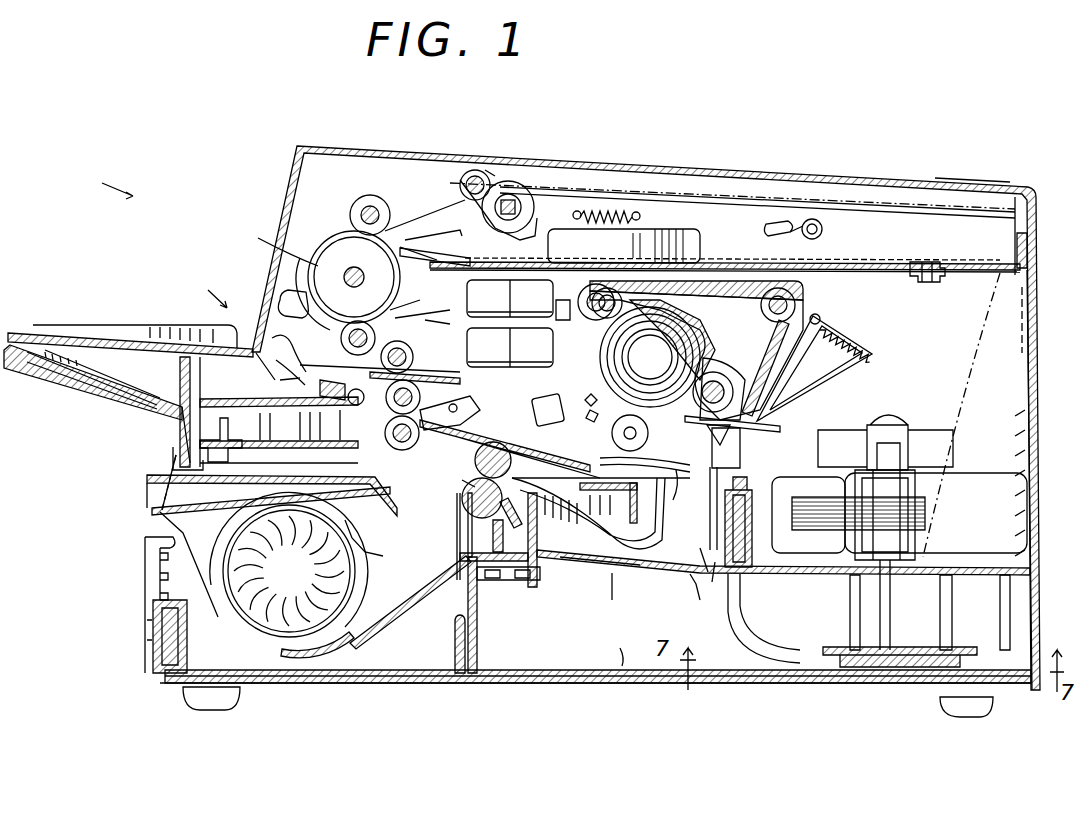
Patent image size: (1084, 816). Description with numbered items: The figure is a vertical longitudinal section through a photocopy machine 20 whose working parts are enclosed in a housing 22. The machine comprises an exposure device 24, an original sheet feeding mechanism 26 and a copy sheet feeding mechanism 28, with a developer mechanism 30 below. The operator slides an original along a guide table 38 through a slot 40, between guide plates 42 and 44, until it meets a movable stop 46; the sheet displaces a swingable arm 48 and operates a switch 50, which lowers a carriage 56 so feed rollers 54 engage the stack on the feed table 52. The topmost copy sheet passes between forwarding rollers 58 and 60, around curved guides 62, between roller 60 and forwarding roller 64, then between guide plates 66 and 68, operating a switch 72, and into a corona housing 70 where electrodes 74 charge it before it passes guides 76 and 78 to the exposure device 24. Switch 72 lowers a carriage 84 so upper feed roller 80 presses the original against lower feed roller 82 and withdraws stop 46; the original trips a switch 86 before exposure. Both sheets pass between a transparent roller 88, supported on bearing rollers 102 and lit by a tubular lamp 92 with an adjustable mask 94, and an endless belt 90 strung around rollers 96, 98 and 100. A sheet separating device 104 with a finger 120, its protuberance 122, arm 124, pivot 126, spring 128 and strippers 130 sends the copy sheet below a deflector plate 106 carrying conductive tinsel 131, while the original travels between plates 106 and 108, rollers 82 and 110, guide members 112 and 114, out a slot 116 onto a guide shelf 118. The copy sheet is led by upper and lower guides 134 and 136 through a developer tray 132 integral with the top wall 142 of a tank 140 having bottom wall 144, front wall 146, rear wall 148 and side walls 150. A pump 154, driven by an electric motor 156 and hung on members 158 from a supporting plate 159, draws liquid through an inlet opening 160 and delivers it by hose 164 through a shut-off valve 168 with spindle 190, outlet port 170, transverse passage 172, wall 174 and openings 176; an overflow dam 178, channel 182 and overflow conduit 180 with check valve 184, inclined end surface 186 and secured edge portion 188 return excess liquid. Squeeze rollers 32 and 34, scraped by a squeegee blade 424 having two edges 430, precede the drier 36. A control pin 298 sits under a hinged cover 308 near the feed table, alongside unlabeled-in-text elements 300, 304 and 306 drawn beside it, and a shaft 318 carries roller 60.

The photocopy machine 20 is at (103, 187).
The housing 22 is at (283, 172).
The exposure device 24 is at (713, 266).
The original sheet feeding mechanism 26 is at (204, 290).
The copy sheet feeding mechanism 28 is at (533, 176).
The developer mechanism 30 is at (1005, 453).
The upper squeeze roller 32 is at (512, 457).
The lower squeeze roller 34 is at (462, 494).
The drier 36 is at (400, 605).
The guide table 38 is at (146, 328).
The slot 40 is at (246, 340).
The guide plate 42 is at (294, 350).
The guide plate 44 is at (267, 369).
The movable stop 46 is at (448, 372).
The swingable arm 48 is at (288, 380).
The switch 50 is at (300, 296).
The feed table 52 is at (688, 258).
The feed rollers 54 is at (732, 174).
The movable carriage 56 is at (472, 170).
The forwarding roller 58 is at (362, 196).
The forwarding roller 60 is at (343, 236).
The curved guides 62 is at (316, 236).
The forwarding roller 64 is at (352, 322).
The guide plate 66 is at (420, 307).
The guide plate 68 is at (425, 362).
The corona housing 70 is at (435, 256).
The switch 72 is at (354, 277).
The electrodes 74 is at (510, 323).
The block 76 is at (563, 300).
The guide 78 is at (594, 293).
The upper feed roller 80 is at (338, 373).
The lower feed roller 82 is at (440, 400).
The movable carriage 84 is at (478, 412).
The switch 86 is at (547, 409).
The transparent roller 88 is at (672, 337).
The endless belt 90 is at (722, 280).
The tubular lamp 92 is at (650, 357).
The adjustable mask 94 is at (693, 305).
The roller 96 is at (652, 240).
The roller 98 is at (735, 356).
The roller 100 is at (696, 355).
The bearing rollers 102 is at (654, 439).
The sheet separating device 104 is at (769, 437).
The deflector plate 106 is at (645, 459).
The guide plate 108 is at (580, 400).
The roller 110 is at (420, 438).
The guide member 112 is at (252, 428).
The guide member 114 is at (252, 428).
The slot 116 is at (180, 404).
The guide shelf 118 is at (112, 340).
The finger 120 is at (785, 428).
The protuberance 122 is at (648, 433).
The arm 124 is at (870, 385).
The pivot 126 is at (818, 314).
The spring 128 is at (822, 350).
The strippers 130 is at (704, 435).
The conductive tinsel 131 is at (680, 490).
The developer tray 132 is at (575, 470).
The upper guide 134 is at (630, 570).
The lower guide 136 is at (588, 513).
The tank 140 is at (460, 613).
The top wall 142 is at (612, 588).
The bottom wall 144 is at (600, 660).
The front wall 146 is at (478, 630).
The rear wall 148 is at (1000, 620).
The lateral side walls 150 is at (630, 680).
The pump 154 is at (912, 646).
The electric motor 156 is at (928, 512).
The members 158 is at (848, 600).
The supporting plate 159 is at (928, 575).
The inlet opening 160 is at (870, 684).
The outlet hose 164 is at (800, 626).
The shut-off valve 168 is at (740, 448).
The outlet port 170 is at (703, 596).
The transverse passage 172 is at (687, 580).
The wall 174 is at (702, 508).
The openings 176 is at (675, 586).
The overflow dam 178 is at (551, 540).
The overflow conduit 180 is at (540, 576).
The channel 182 is at (505, 538).
The check valve 184 is at (500, 580).
The inclined end surface 186 is at (468, 592).
The edge portion 188 is at (460, 555).
The valve spindle 190 is at (755, 518).
The control pin 298 is at (820, 222).
The clamp 300 is at (805, 212).
The arm 304 is at (770, 224).
The pivot 306 is at (815, 219).
The hinged cover 308 is at (935, 178).
The shaft 318 is at (265, 246).
The squeegee blade 424 is at (463, 513).
The longitudinal edges 430 is at (453, 476).